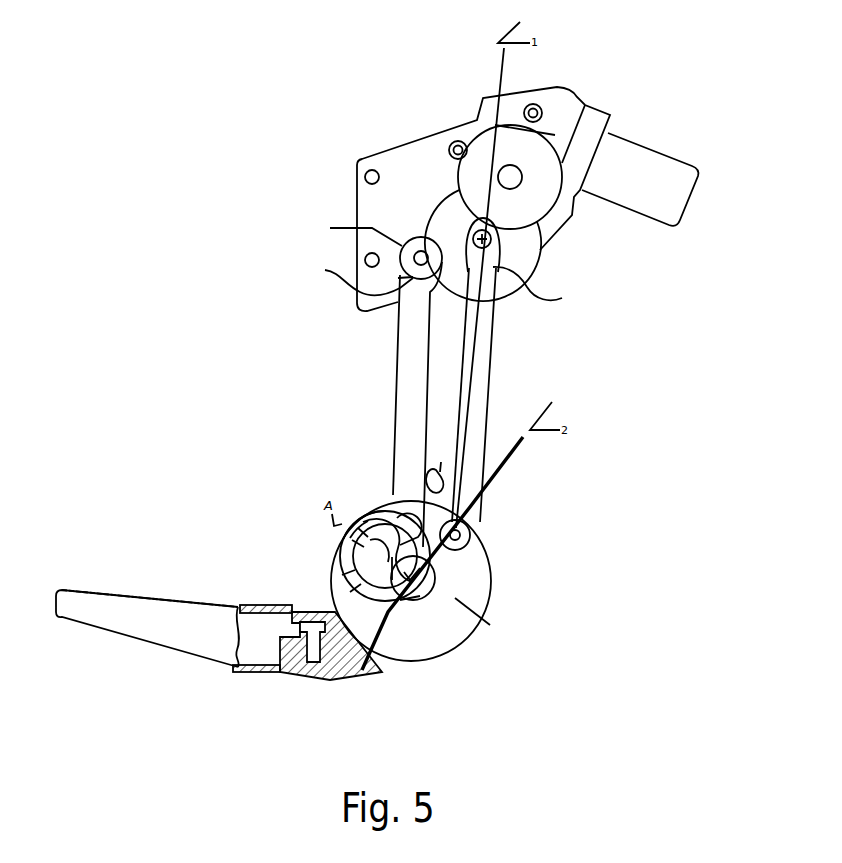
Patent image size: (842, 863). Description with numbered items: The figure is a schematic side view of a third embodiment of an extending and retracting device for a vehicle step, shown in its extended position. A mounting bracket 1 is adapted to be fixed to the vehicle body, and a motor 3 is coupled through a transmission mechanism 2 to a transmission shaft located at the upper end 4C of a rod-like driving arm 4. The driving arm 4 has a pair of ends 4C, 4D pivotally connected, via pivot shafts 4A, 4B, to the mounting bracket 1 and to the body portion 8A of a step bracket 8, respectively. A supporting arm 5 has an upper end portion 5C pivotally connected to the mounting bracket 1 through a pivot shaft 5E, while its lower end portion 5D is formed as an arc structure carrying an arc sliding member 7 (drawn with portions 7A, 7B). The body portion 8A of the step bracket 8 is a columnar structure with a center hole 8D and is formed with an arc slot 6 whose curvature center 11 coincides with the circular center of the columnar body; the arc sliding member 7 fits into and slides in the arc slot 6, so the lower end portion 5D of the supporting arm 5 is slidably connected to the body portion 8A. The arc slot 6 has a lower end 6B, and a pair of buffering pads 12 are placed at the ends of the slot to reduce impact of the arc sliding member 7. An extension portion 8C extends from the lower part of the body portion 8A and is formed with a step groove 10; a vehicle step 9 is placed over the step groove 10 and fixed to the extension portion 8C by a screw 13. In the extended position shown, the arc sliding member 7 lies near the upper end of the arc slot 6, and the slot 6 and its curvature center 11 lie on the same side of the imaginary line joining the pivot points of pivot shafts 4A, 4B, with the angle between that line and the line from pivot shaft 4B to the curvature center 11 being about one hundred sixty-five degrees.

The mounting bracket 1 is at (405, 175).
The transmission mechanism 2 is at (498, 147).
The motor 3 is at (633, 168).
The driving arm 4 is at (477, 347).
The pivot shaft 4A is at (490, 245).
The pivot shaft 4B is at (462, 520).
The upper end of driving arm 4C is at (562, 298).
The end of driving arm 4D is at (473, 532).
The supporting arm 5 is at (410, 432).
The upper end portion of supporting arm 5C is at (325, 270).
The lower end portion of supporting arm 5D is at (345, 548).
The pivot shaft 5E is at (330, 228).
The arc slot 6 is at (360, 580).
The lower end of arc slot 6B is at (333, 600).
The arc sliding member 7 is at (390, 530).
The ring lobe 7A is at (397, 517).
The ring portion 7B is at (358, 527).
The step bracket 8 is at (467, 577).
The body portion 8A is at (487, 593).
The extension portion 8C is at (357, 680).
The center hole 8D is at (410, 593).
The vehicle step 9 is at (167, 652).
The step groove 10 is at (300, 673).
The curvature center of arc slot 11 is at (413, 597).
The buffering pad 12 is at (385, 605).
The screw 13 is at (240, 600).